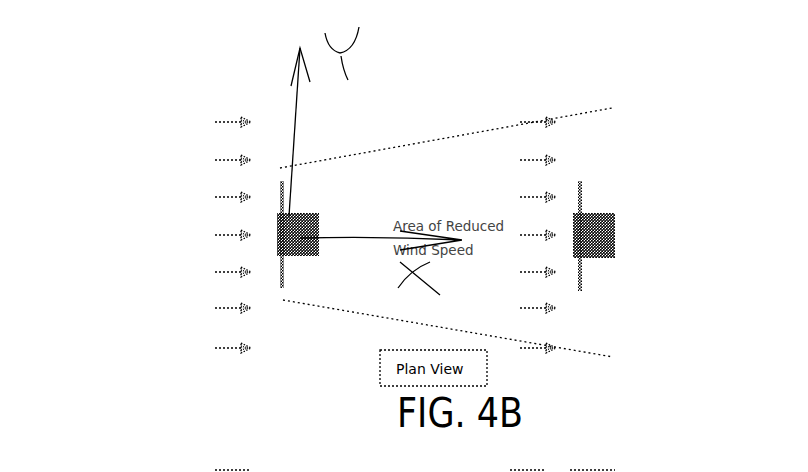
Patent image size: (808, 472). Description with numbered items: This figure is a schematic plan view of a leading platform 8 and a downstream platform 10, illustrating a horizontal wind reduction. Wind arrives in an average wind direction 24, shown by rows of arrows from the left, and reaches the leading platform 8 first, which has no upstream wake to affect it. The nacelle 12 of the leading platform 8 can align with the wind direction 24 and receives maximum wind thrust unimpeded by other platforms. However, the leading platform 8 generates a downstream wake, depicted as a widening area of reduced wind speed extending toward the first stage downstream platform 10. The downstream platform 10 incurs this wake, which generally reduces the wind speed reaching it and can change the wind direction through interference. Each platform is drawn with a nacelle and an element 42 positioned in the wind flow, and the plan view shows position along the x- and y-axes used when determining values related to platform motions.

The leading platform 8 is at (300, 258).
The first stage downstream platform 10 is at (603, 267).
The nacelle 12 is at (300, 238).
The average wind direction 24 is at (175, 293).
The housing / generator unit 42 is at (316, 213).